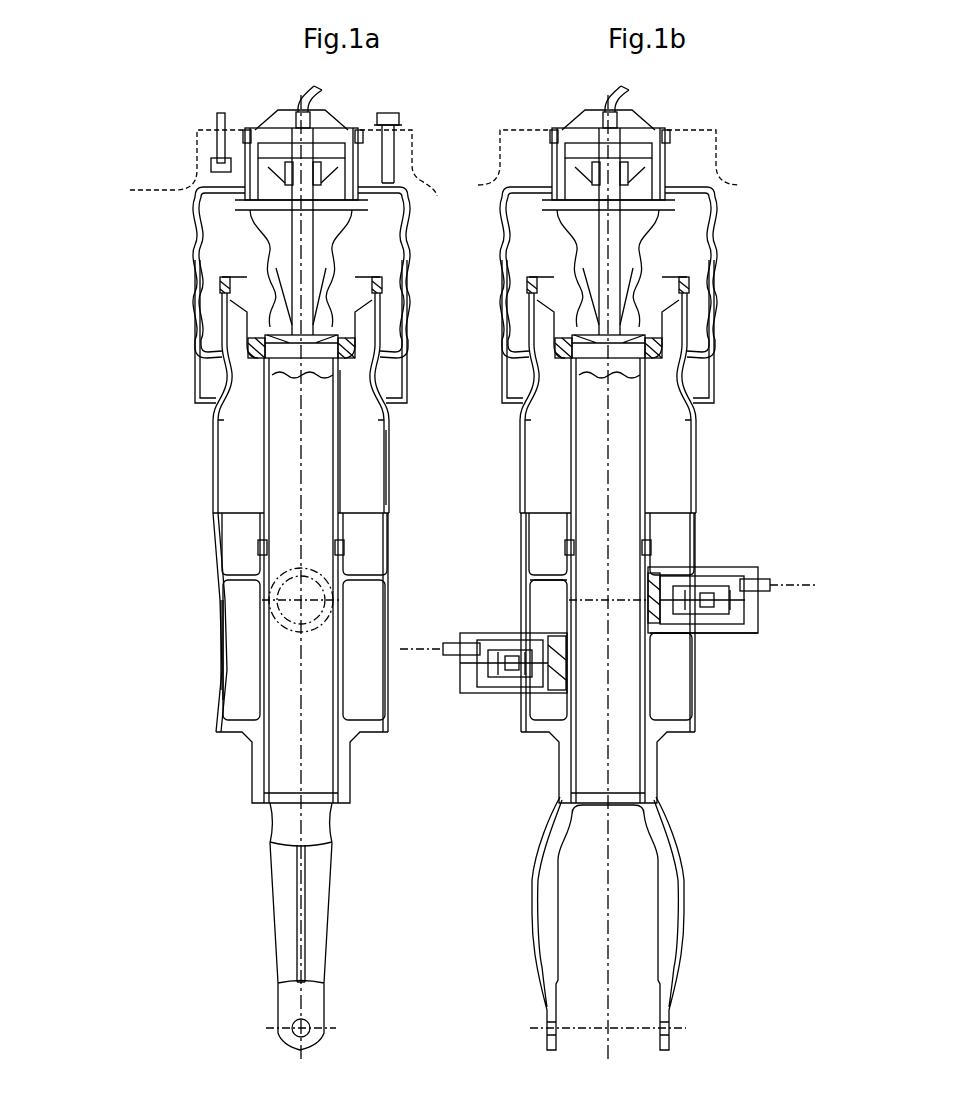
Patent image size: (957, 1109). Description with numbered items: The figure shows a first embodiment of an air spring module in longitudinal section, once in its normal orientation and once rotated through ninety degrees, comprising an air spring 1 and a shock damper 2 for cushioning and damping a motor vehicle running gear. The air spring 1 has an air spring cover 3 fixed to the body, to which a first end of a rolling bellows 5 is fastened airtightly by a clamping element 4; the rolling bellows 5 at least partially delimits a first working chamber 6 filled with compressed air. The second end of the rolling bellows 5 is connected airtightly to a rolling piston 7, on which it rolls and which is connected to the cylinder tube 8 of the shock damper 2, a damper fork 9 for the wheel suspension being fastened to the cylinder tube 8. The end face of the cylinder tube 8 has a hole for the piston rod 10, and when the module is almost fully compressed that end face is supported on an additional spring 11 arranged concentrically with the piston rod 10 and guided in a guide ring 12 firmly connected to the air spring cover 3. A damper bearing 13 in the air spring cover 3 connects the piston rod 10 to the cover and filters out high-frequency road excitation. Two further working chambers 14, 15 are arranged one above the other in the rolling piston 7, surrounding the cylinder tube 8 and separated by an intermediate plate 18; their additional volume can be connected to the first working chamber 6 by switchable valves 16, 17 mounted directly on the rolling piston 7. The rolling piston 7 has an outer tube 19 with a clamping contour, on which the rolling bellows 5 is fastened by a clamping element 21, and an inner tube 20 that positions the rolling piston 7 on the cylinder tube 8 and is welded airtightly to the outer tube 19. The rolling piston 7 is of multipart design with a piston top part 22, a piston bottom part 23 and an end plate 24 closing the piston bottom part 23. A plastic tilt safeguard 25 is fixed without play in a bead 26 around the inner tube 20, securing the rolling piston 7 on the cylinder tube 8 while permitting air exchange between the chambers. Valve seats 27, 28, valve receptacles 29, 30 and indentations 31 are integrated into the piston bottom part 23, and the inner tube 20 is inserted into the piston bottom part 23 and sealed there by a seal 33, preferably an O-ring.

In FIG. 1A, the air spring 1 is at (179, 219).
In FIG. 1B, the air spring 1 is at (740, 212).
In FIG. 1A, the shock damper 2 is at (256, 465).
In FIG. 1A, the air spring cover 3 is at (398, 173).
In FIG. 1A, the clamping element 4 is at (414, 177).
In FIG. 1A, the rolling bellows 5 is at (410, 212).
In FIG. 1A, the first working chamber 6 is at (376, 253).
In FIG. 1B, the first working chamber 6 is at (684, 253).
In FIG. 1A, the rolling piston 7 is at (213, 377).
In FIG. 1B, the rolling piston 7 is at (710, 447).
In FIG. 1A, the cylinder tube 8 is at (283, 427).
In FIG. 1B, the cylinder tube 8 is at (593, 492).
In FIG. 1A, the damper fork 9 is at (282, 902).
In FIG. 1B, the damper fork 9 is at (670, 905).
In FIG. 1A, the piston rod 10 is at (298, 250).
In FIG. 1A, the additional spring 11 is at (277, 263).
In FIG. 1A, the guide ring 12 is at (165, 217).
In FIG. 1A, the damper bearing 13 is at (338, 136).
In FIG. 1A, the second working chamber 14 is at (250, 491).
In FIG. 1B, the second working chamber 14 is at (685, 491).
In FIG. 1A, the third working chamber 15 is at (252, 683).
In FIG. 1B, the third working chamber 15 is at (679, 683).
In FIG. 1B, the switchable valve 16 is at (731, 555).
In FIG. 1B, the switchable valve 17 is at (485, 702).
In FIG. 1A, the intermediate plate 18 is at (243, 578).
In FIG. 1B, the intermediate plate 18 is at (543, 578).
In FIG. 1A, the outer tube 19 is at (389, 463).
In FIG. 1A, the inner tube 20 is at (347, 410).
In FIG. 1A, the clamping element 21 is at (382, 291).
In FIG. 1A, the piston top part 22 is at (204, 467).
In FIG. 1A, the piston bottom part 23 is at (225, 630).
In FIG. 1A, the end plate 24 is at (237, 733).
In FIG. 1A, the tilt safeguard 25 is at (252, 359).
In FIG. 1A, the bead 26 is at (350, 360).
In FIG. 1B, the valve seat 27 is at (653, 573).
In FIG. 1B, the valve seat 28 is at (560, 633).
In FIG. 1B, the valve receptacle 29 is at (710, 633).
In FIG. 1B, the valve receptacle 30 is at (503, 637).
In FIG. 1A, the indentation 31 is at (213, 659).
In FIG. 1A, the seal 33 is at (347, 540).